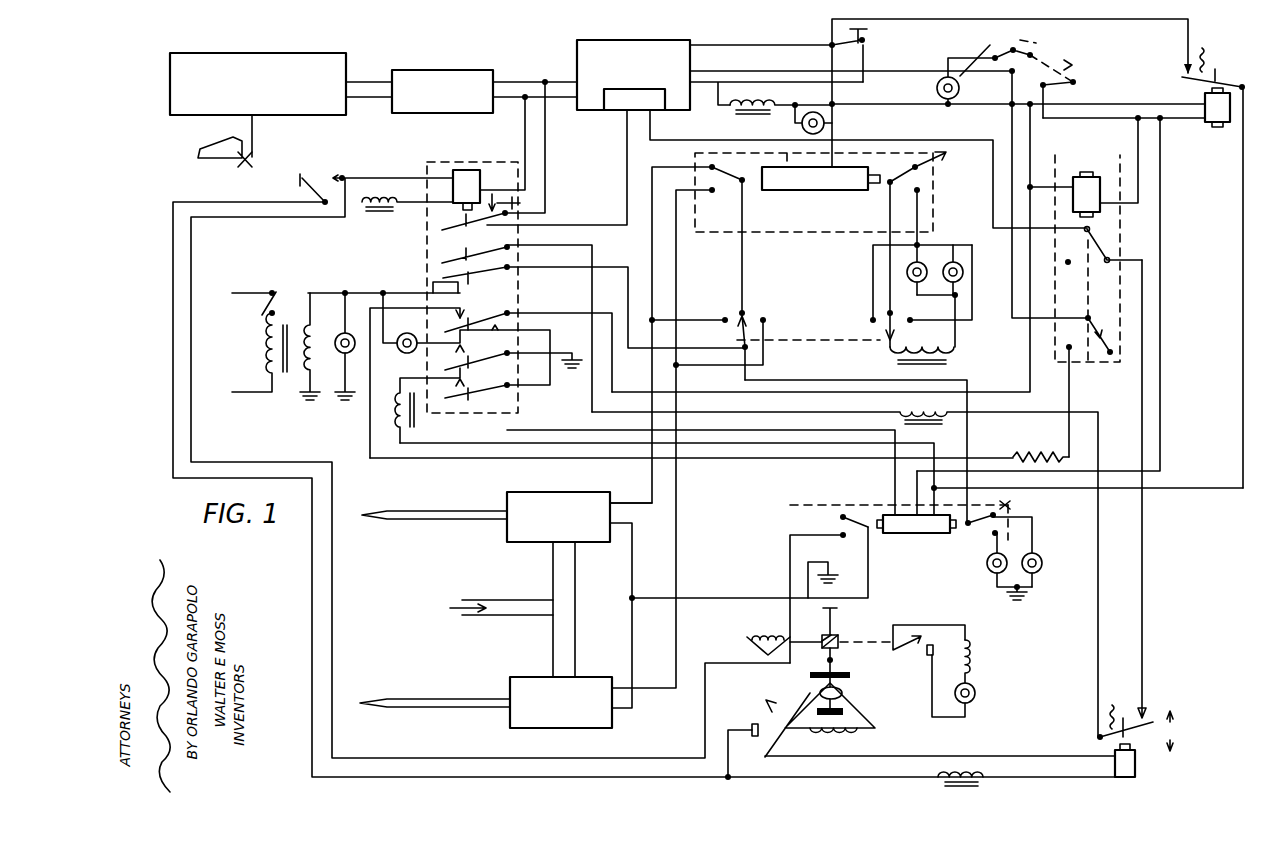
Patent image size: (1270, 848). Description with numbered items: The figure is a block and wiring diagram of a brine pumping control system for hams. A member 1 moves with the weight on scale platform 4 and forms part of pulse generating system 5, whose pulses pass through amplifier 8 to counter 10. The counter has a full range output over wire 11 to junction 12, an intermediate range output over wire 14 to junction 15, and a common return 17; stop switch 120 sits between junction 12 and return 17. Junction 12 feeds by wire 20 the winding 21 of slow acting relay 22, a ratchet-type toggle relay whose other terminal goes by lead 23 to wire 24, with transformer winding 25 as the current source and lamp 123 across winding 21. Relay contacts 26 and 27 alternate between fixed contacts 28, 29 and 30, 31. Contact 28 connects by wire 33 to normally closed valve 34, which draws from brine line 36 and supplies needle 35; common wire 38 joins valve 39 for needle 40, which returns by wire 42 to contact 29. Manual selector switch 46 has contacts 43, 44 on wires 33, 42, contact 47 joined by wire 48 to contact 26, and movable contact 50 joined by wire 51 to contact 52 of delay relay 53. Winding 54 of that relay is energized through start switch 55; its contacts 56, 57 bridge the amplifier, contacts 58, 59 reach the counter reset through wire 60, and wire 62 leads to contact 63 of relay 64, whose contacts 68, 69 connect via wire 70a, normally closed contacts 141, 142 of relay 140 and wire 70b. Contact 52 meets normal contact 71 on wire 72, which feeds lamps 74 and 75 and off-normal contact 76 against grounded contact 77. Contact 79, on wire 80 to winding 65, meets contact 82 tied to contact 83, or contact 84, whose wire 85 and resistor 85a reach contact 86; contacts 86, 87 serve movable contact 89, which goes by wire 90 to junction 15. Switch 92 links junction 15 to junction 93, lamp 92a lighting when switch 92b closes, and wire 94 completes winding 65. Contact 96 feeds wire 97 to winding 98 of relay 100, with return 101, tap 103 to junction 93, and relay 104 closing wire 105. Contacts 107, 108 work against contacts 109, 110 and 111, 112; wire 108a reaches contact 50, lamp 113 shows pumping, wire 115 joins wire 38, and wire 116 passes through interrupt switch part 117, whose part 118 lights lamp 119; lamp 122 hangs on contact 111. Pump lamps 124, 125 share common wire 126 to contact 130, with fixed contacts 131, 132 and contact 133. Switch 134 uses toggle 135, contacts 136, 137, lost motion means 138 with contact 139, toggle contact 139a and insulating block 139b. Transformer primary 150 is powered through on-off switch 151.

The member 1 is at (255, 150).
The scale platform 4 is at (215, 158).
The pulse generating system 5 is at (170, 88).
The amplifier 8 is at (437, 54).
The counter 10 is at (577, 53).
The wire 11 is at (698, 38).
The junction 12 is at (822, 38).
The wire 14 is at (900, 56).
The junction 15 is at (1010, 65).
The common return 17 is at (718, 95).
The wire 20 is at (835, 99).
The winding 21 is at (821, 178).
The slow acting relay 22 is at (797, 235).
The lead 23 is at (795, 108).
The wire 24 is at (950, 100).
The transformer winding 25 is at (743, 110).
The movable contact 26 is at (720, 165).
The movable contact 27 is at (902, 172).
The fixed contact 28 is at (712, 170).
The fixed contact 29 is at (713, 193).
The fixed contact 30 is at (936, 157).
The fixed contact 31 is at (908, 224).
The wire 33 is at (650, 252).
The electrically actuated valve 34 is at (612, 515).
The needle 35 is at (370, 518).
The brine line 36 is at (575, 582).
The common wire 38 is at (634, 585).
The valve 39 is at (612, 724).
The needle 40 is at (352, 700).
The wire 42 is at (645, 690).
The contact 43 is at (722, 321).
The contact 44 is at (767, 324).
The manual selector switch 46 is at (816, 341).
The contact 47 is at (746, 304).
The wire 48 is at (742, 264).
The movable contact 50 is at (756, 356).
The wire 51 is at (628, 286).
The movable contact 52 is at (473, 264).
The delay relay 53 is at (427, 246).
The winding 54 is at (482, 186).
The start switch 55 is at (320, 174).
The movable contact 56 is at (456, 216).
The off-normal contact 57 is at (514, 204).
The movable contact 58 is at (464, 254).
The off-normal contact 59 is at (493, 240).
The wire 60 is at (618, 198).
The wire 62 is at (682, 145).
The movable contact 63 is at (1104, 238).
The relay 64 is at (1120, 216).
The winding 65 is at (1073, 203).
The contact 68 is at (1106, 283).
The contact 69 is at (1071, 268).
The wire 70a is at (1142, 602).
The wire 70b is at (1102, 670).
The normal contact 71 is at (428, 284).
The wire 72 is at (316, 293).
The lamp 74 is at (350, 334).
The lamp 75 is at (410, 336).
The off-normal contact 76 is at (462, 354).
The movable contact 77 is at (478, 368).
The movable contact 79 is at (494, 308).
The wire 80 is at (640, 387).
The normal contact 82 is at (494, 332).
The movable contact 83 is at (474, 394).
The off-normal contact 84 is at (466, 312).
The wire 85 is at (382, 458).
The current limiting resistor 85a is at (1052, 434).
The contact 86 is at (1072, 354).
The contact 87 is at (1112, 360).
The movable contact 89 is at (1092, 306).
The wire 90 is at (1012, 327).
The switch 92 is at (1058, 98).
The lamp 92a is at (996, 51).
The switch 92b is at (1012, 50).
The junction 93 is at (1136, 116).
The wire 94 is at (1136, 148).
The off-normal contact 96 is at (460, 391).
The wire 97 is at (410, 430).
The winding 98 is at (916, 524).
The relay 100 is at (836, 504).
The common return 101 is at (846, 430).
The tap 103 is at (1162, 446).
The relay 104 is at (1200, 123).
The wire 105 is at (1118, 24).
The movable contact 107 is at (860, 510).
The movable contact 108 is at (978, 528).
The wire 108a is at (864, 382).
The dead contact 109 is at (840, 518).
The live contact 110 is at (852, 539).
The contact 111 is at (1010, 503).
The contact 112 is at (1022, 537).
The lamp 113 is at (988, 572).
The wire 115 is at (700, 598).
The wire 116 is at (790, 552).
The interrupt toggle switch part 117 is at (784, 649).
The interrupt switch part 118 is at (886, 630).
The control lamp 119 is at (976, 695).
The stop switch 120 is at (849, 63).
The lamp 122 is at (1042, 570).
The lamp 123 is at (826, 121).
The pump indicator lamp 124 is at (965, 282).
The pump indicator lamp 125 is at (930, 262).
The common wire 126 is at (952, 322).
The movable contact 130 is at (922, 349).
The fixed contact 131 is at (910, 320).
The fixed contact 132 is at (870, 322).
The contact 133 is at (884, 308).
The toggle switch 134 is at (820, 720).
The toggle 135 is at (850, 735).
The movable contact 136 is at (768, 752).
The fixed contact 137 is at (752, 722).
The lost motion means 138 is at (835, 662).
The contact 139 is at (846, 712).
The toggle contact 139a is at (844, 693).
The insulating block 139b is at (852, 676).
The relay 140 is at (1136, 774).
The contact 141 is at (1142, 714).
The contact 142 is at (1130, 736).
The transformer primary 150 is at (268, 362).
The on-off switch 151 is at (276, 294).